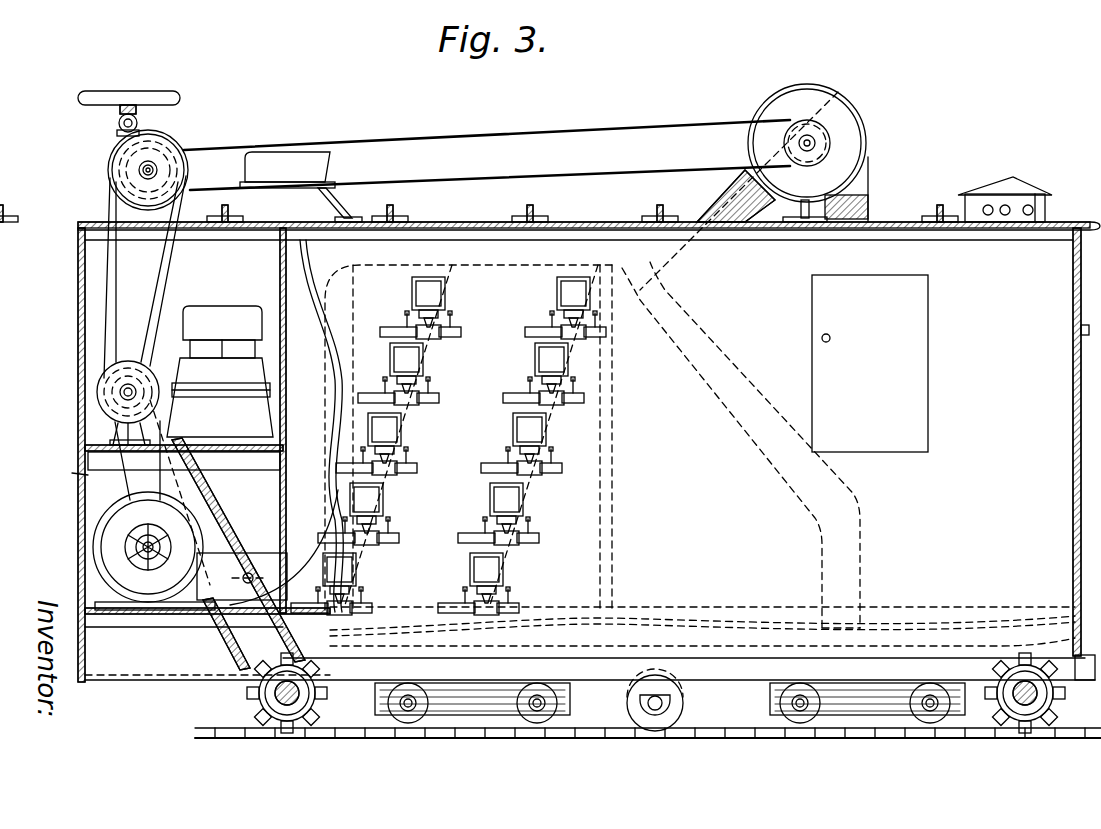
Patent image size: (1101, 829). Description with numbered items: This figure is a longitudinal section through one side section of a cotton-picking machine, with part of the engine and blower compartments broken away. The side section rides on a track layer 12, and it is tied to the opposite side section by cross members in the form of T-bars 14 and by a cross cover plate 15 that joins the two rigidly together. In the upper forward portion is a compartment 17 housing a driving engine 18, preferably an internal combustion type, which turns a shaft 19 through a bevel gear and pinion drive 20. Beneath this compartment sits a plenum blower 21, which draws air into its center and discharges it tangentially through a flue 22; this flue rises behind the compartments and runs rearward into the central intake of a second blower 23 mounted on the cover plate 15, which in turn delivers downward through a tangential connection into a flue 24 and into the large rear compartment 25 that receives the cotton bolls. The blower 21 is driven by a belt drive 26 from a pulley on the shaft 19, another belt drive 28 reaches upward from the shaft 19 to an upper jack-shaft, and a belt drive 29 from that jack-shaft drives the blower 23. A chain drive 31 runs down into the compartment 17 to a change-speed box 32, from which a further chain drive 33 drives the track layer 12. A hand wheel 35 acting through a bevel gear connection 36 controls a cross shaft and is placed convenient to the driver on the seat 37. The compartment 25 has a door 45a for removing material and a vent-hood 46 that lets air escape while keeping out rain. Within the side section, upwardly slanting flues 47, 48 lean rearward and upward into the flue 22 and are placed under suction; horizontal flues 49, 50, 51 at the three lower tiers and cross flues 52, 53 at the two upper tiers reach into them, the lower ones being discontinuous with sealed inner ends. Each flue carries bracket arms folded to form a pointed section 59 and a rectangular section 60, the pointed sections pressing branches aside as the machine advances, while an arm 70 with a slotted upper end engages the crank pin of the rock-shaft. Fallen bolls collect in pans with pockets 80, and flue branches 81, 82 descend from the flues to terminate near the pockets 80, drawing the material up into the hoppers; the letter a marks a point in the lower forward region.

The track layer 12 is at (596, 741).
The T-bars 14 is at (645, 203).
The cross cover plate 15 is at (468, 222).
The compartment 17 is at (205, 280).
The driving engine 18 is at (238, 303).
The shaft 19 is at (110, 392).
The bevel gear and pinion drive 20 is at (228, 480).
The plenum blower 21 is at (105, 556).
The flue 22 is at (300, 518).
The blower 23 is at (858, 140).
The flue 24 is at (860, 200).
The compartment 25 is at (586, 455).
The belt drive 26 is at (160, 495).
The belt drive 28 is at (100, 343).
The belt drive 29 is at (506, 130).
The chain drive 31 is at (118, 318).
The change-speed box 32 is at (112, 420).
The chain drive 33 is at (232, 650).
The hand wheel 35 is at (181, 100).
The bevel gear connection 36 is at (117, 122).
The seat 37 is at (292, 162).
The door 45a is at (832, 380).
The vent-hood 46 is at (1016, 192).
The upwardly slanting flue 47 is at (408, 420).
The upwardly slanting flue 48 is at (548, 427).
The horizontal flue 49 is at (352, 565).
The horizontal flue 50 is at (380, 493).
The horizontal flue 51 is at (402, 436).
The cross flue 52 is at (425, 363).
The cross flue 53 is at (437, 297).
The pointed section 59 is at (400, 327).
The rectangular section 60 is at (452, 325).
The arm 70 is at (468, 320).
The pocket 80 is at (407, 637).
The flue branch 81 is at (468, 437).
The flue branch 82 is at (836, 482).
The point a is at (73, 472).